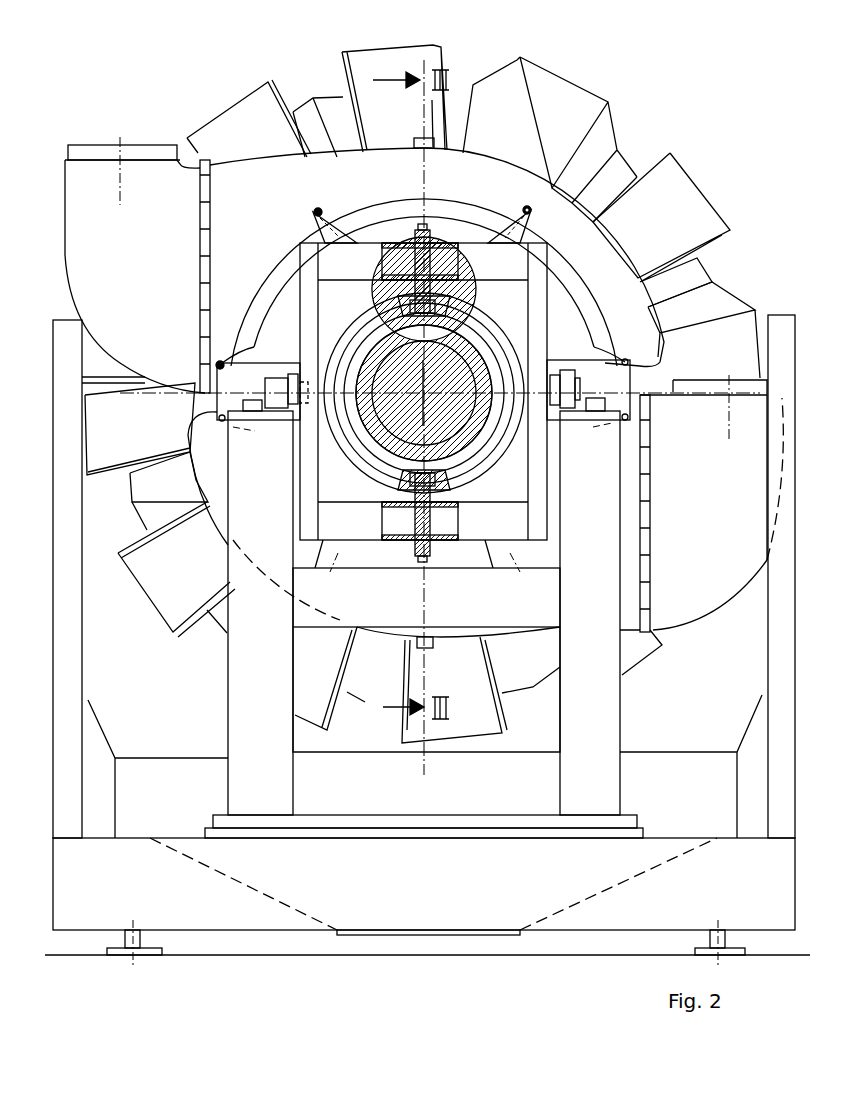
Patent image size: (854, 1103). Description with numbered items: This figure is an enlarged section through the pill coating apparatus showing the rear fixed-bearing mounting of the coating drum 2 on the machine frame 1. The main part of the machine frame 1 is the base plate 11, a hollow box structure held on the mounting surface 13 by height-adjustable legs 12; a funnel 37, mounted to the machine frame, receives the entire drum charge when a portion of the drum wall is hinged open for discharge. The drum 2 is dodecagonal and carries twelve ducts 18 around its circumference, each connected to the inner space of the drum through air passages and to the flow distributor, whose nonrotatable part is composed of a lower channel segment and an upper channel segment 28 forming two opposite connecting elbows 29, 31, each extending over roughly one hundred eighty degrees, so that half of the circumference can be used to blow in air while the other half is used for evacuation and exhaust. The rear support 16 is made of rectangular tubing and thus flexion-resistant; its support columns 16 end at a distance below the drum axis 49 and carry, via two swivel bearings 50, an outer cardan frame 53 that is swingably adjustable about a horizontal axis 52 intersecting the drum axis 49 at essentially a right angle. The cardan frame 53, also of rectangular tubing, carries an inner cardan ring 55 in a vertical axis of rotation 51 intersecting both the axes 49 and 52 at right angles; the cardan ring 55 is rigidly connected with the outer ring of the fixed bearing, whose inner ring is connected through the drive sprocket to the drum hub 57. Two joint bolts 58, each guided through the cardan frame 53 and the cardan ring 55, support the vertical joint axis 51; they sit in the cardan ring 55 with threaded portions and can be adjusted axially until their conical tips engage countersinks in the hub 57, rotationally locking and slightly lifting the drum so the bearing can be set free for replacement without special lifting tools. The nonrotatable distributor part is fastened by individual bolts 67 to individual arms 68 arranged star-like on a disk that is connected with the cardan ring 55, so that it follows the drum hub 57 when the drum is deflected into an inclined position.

The machine frame 1 is at (50, 318).
The coating drum 2 is at (422, 373).
The base plate 11 is at (167, 896).
The height-adjustable legs 12 is at (148, 950).
The mounting surface 13 is at (220, 945).
The rear support 16 is at (272, 512).
The ducts 18 is at (676, 165).
The upper channel segment 28 is at (407, 186).
The connecting elbow 29 is at (723, 482).
The connecting elbow 31 is at (160, 252).
The funnel 37 is at (280, 893).
The drum axis 49 is at (423, 388).
The swivel bearings 50 is at (272, 374).
The vertical axis of rotation 51 is at (433, 410).
The horizontal axis 52 is at (375, 383).
The outer cardan frame 53 is at (550, 340).
The inner cardan ring 55 is at (480, 317).
The drum hub 57 is at (375, 432).
The joint bolts 58 is at (445, 222).
The bolts 67 is at (318, 210).
The arms 68 is at (347, 232).